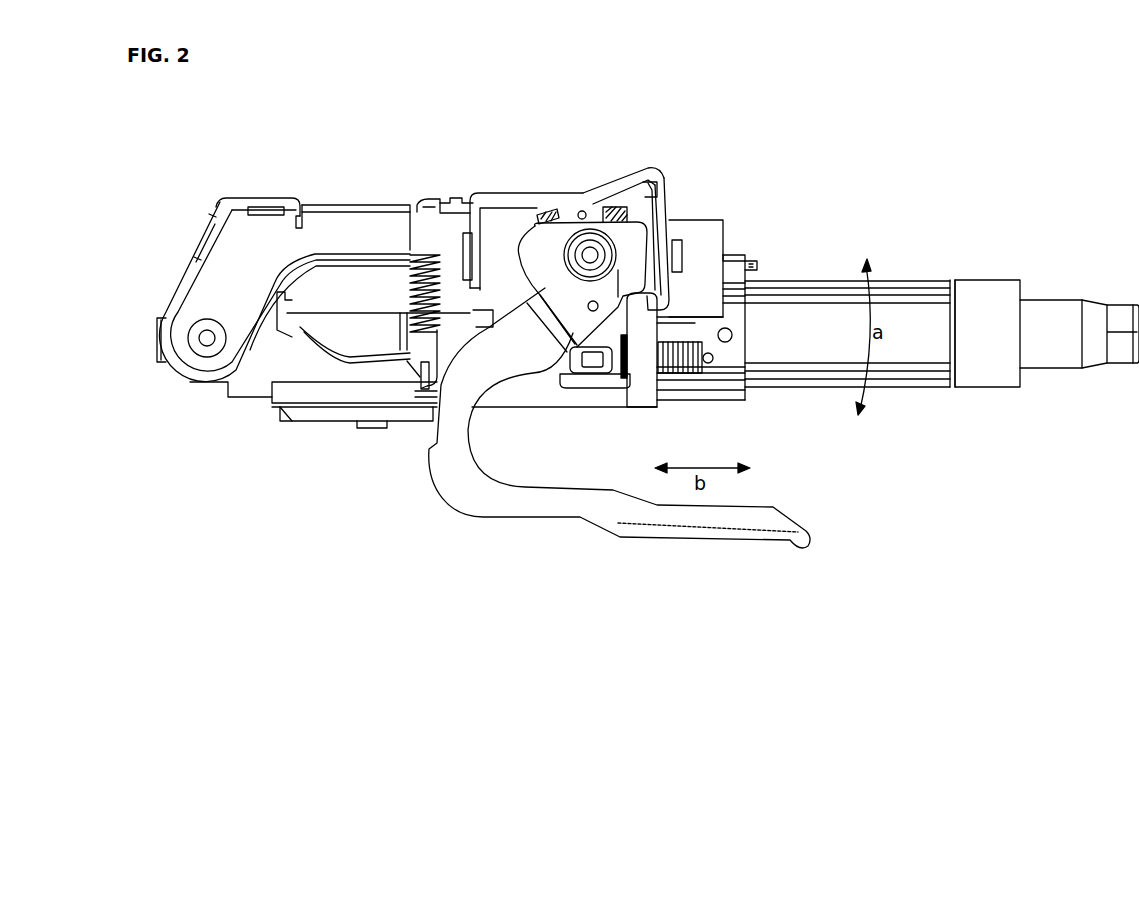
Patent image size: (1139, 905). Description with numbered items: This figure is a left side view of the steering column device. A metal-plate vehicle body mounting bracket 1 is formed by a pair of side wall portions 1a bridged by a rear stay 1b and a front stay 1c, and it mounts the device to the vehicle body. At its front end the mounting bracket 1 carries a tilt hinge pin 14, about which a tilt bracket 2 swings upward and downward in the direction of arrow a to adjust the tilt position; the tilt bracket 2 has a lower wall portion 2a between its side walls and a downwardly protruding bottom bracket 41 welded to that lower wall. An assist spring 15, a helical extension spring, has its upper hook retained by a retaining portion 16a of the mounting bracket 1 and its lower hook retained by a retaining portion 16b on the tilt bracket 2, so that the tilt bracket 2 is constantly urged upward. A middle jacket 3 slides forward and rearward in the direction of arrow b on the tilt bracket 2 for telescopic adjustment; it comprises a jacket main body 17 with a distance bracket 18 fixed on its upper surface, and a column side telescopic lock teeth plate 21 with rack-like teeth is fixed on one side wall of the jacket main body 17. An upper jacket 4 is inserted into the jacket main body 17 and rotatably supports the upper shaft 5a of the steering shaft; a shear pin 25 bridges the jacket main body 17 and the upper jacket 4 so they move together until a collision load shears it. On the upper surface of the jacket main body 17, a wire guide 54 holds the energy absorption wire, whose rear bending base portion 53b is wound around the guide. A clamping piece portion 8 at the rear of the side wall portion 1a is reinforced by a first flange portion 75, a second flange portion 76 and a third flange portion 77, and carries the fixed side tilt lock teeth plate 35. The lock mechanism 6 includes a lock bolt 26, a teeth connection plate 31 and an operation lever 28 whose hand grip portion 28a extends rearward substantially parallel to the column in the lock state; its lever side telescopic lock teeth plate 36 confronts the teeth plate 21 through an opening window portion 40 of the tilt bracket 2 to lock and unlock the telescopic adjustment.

The vehicle body mounting bracket 1 is at (505, 180).
The side wall portion 1a is at (352, 235).
The rear stay 1b is at (648, 182).
The front stay 1c is at (260, 200).
The tilt bracket 2 is at (297, 409).
The lower wall portion 2a is at (516, 410).
The middle jacket 3 is at (713, 405).
The upper jacket 4 is at (898, 278).
The upper shaft 5a is at (1050, 350).
The lock mechanism 6 is at (561, 391).
The clamping piece portion 8 is at (645, 218).
The tilt hinge pin 14 is at (204, 348).
The assist spring 15 is at (410, 310).
The retaining portion 16a is at (423, 206).
The retaining portion 16b is at (418, 385).
The jacket main body 17 is at (727, 395).
The distance bracket 18 is at (683, 262).
The column side telescopic lock teeth plate 21 is at (682, 372).
The shear pin 25 is at (730, 340).
The lock bolt 26 is at (590, 247).
The operation lever 28 is at (457, 498).
The hand grip portion 28a is at (705, 513).
The teeth connection plate 31 is at (522, 252).
The fixed side tilt lock teeth plate 35 is at (622, 190).
The lever side telescopic lock teeth plate 36 is at (620, 366).
The opening window portion 40 is at (567, 372).
The bottom bracket 41 is at (330, 420).
The rear bending base portion 53b is at (760, 267).
The wire guide 54 is at (748, 257).
The first flange portion 75 is at (476, 243).
The second flange portion 76 is at (612, 180).
The third flange portion 77 is at (667, 233).